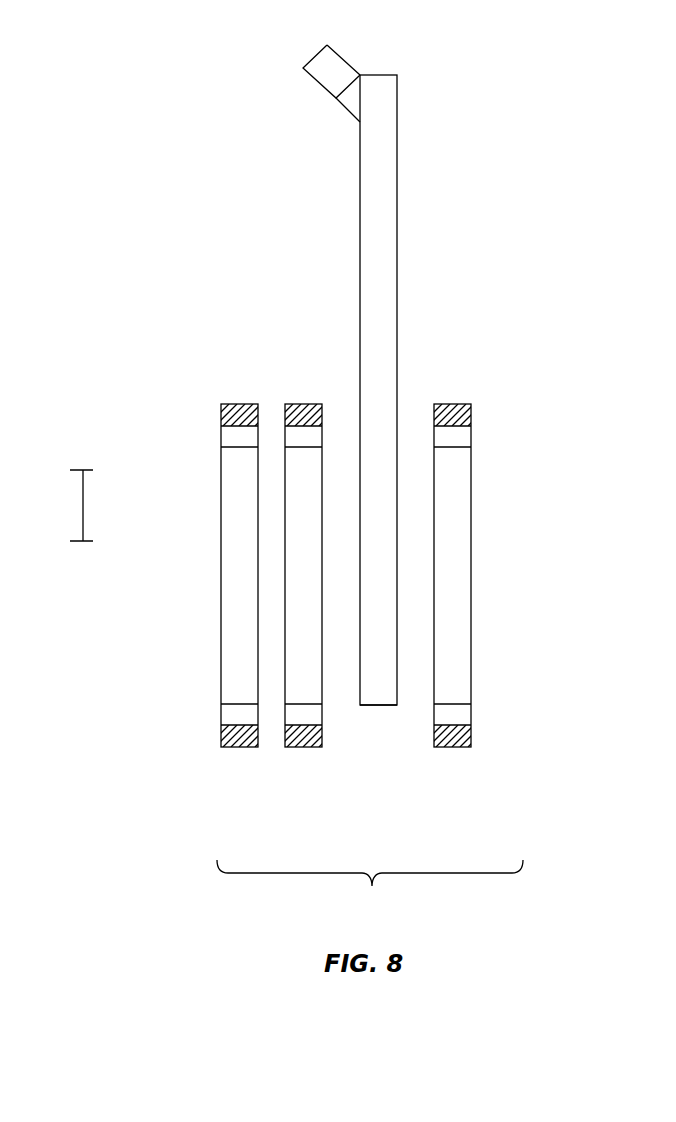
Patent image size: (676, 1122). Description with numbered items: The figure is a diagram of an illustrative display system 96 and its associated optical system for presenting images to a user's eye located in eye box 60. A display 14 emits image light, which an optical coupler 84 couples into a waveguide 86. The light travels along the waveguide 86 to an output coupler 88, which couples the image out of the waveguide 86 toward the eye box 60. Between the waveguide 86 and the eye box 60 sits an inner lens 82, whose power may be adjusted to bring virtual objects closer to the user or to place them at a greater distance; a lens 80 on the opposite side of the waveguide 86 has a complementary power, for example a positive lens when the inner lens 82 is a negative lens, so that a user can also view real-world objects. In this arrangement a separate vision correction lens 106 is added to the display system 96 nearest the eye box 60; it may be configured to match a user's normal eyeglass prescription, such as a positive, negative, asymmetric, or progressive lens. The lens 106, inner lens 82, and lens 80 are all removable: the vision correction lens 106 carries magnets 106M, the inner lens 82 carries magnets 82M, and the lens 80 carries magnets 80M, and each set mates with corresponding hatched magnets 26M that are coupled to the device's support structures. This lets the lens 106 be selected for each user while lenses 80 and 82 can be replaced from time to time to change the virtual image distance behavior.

The display 14 is at (340, 55).
The optical coupler 84 is at (345, 110).
The waveguide 86 is at (383, 217).
The output coupler 88 is at (392, 661).
The inner lens 82 is at (318, 663).
The magnets 82M is at (318, 438).
The vision correction lens 106 is at (221, 634).
The magnets 106M is at (221, 437).
The lens 80 is at (466, 485).
The magnets 80M is at (471, 440).
The magnets 26M is at (304, 404).
The eye box 60 is at (81, 545).
The display system 96 is at (370, 886).